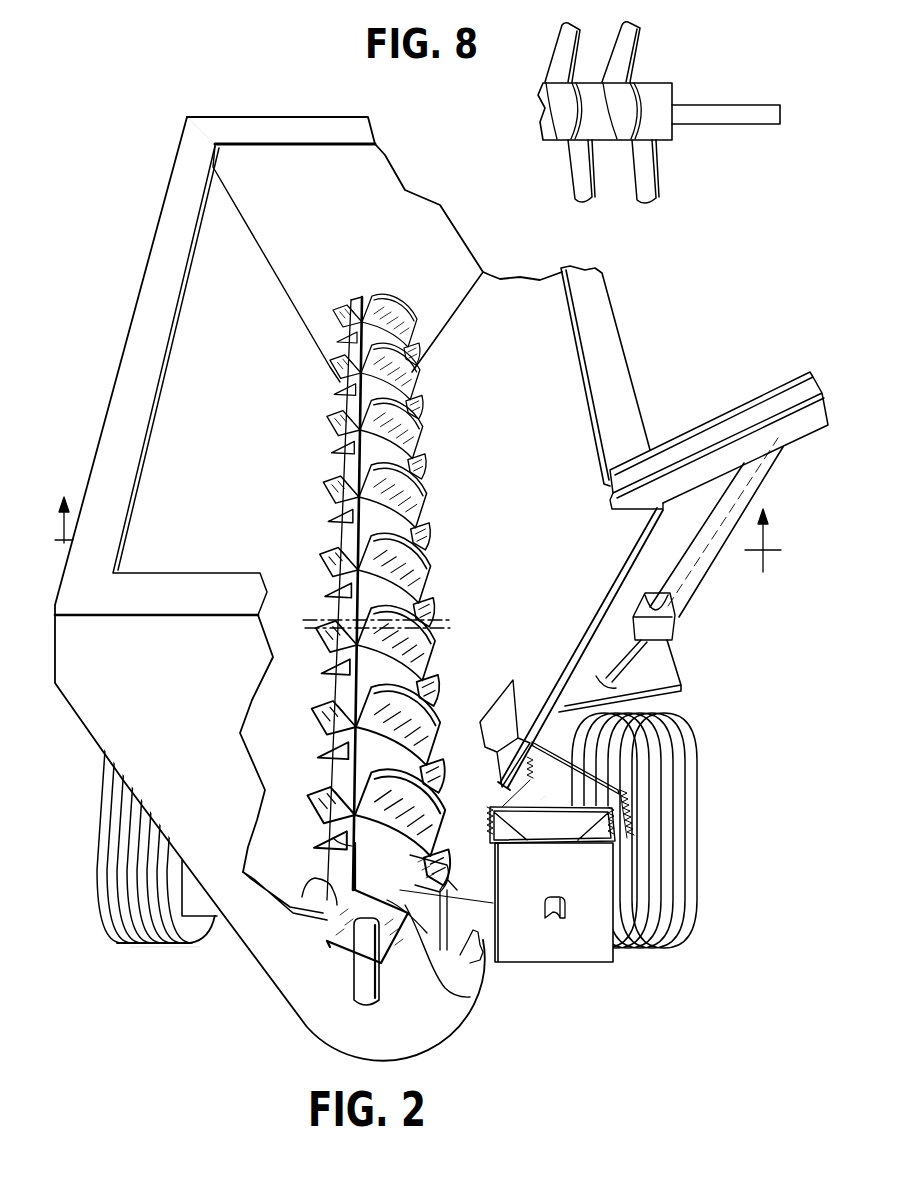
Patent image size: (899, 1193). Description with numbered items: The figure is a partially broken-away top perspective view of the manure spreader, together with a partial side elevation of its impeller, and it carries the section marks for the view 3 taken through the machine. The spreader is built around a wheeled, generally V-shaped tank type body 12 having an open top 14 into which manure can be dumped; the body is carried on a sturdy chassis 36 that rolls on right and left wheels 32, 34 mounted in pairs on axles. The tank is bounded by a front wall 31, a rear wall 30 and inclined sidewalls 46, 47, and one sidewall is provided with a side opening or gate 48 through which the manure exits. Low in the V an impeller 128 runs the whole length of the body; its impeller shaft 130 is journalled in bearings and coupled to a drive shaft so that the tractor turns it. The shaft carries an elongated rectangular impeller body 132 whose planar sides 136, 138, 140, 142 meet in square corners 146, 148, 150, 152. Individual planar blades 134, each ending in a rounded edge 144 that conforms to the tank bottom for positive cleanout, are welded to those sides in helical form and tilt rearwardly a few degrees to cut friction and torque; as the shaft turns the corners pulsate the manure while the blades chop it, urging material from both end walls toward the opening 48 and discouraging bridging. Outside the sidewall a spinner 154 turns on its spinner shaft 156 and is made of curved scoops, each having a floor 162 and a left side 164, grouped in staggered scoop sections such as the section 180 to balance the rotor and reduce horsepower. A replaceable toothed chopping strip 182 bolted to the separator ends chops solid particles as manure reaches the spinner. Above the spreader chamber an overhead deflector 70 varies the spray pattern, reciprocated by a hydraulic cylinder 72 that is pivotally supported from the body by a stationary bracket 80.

In FIG. 2, the tank type body 12 is at (616, 303).
In FIG. 2, the open top 14 is at (226, 113).
In FIG. 2, the rear wall 30 is at (277, 182).
In FIG. 2, the front wall 31 is at (144, 718).
In FIG. 2, the right wheels 32 is at (684, 868).
In FIG. 2, the left wheels 34 is at (123, 897).
In FIG. 2, the chassis 36 is at (171, 955).
In FIG. 2, the inclined sidewall 46 is at (544, 543).
In FIG. 2, the inclined sidewall 47 is at (226, 476).
In FIG. 2, the side opening 48 is at (452, 768).
In FIG. 2, the overhead deflector 70 is at (653, 677).
In FIG. 2, the hydraulic cylinder 72 is at (767, 485).
In FIG. 2, the stationary bracket 80 is at (706, 420).
In FIG. 2, the impeller 128 is at (428, 463).
In FIG. 8, the impeller 128 is at (604, 204).
In FIG. 2, the impeller shaft 130 is at (367, 993).
In FIG. 8, the impeller shaft 130 is at (735, 100).
In FIG. 2, the impeller body 132 is at (340, 847).
In FIG. 2, the blades 134 is at (430, 420).
In FIG. 8, the planar side 136 is at (657, 148).
In FIG. 2, the planar side 138 is at (292, 908).
In FIG. 2, the planar side 140 is at (477, 920).
In FIG. 8, the planar side 140 is at (663, 76).
In FIG. 8, the planar side 142 is at (660, 103).
In FIG. 2, the rounded edge 144 is at (432, 508).
In FIG. 8, the rounded edge 144 is at (563, 46).
In FIG. 2, the square corner 146 is at (330, 937).
In FIG. 2, the square corner 148 is at (335, 897).
In FIG. 2, the square corner 150 is at (463, 990).
In FIG. 2, the square corner 152 is at (435, 1040).
In FIG. 2, the spinner 154 is at (597, 970).
In FIG. 2, the spinner shaft 156 is at (562, 917).
In FIG. 2, the floor 162 is at (625, 818).
In FIG. 2, the left side 164 is at (542, 803).
In FIG. 2, the scoop section 180 is at (590, 797).
In FIG. 2, the chopping strip 182 is at (486, 870).
In FIG. 2, the section line 3- 3 is at (418, 543).